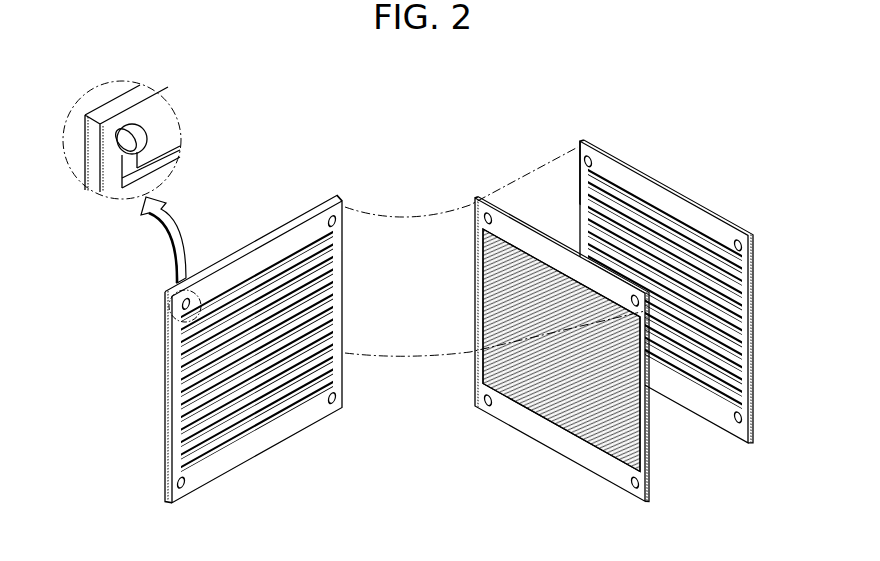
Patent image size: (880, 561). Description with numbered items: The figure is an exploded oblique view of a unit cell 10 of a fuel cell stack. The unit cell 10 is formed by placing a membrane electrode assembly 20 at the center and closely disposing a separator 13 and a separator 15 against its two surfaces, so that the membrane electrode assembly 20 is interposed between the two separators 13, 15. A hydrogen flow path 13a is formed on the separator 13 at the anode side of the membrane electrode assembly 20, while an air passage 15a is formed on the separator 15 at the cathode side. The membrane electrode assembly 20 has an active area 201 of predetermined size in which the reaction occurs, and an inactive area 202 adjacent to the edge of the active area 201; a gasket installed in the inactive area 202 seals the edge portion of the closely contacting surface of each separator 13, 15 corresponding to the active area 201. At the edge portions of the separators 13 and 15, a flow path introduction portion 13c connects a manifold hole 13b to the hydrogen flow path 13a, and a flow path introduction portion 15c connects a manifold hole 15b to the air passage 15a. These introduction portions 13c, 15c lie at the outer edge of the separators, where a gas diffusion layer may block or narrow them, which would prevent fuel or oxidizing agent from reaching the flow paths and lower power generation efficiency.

The unit cell 10 is at (442, 128).
The separator 13 is at (202, 294).
The hydrogen flow path 13a is at (259, 273).
The manifold hole 13b is at (147, 133).
The flow path introduction portion 13c is at (131, 186).
The separator 15 is at (630, 237).
The air passage 15a is at (652, 212).
The manifold hole 15b is at (587, 153).
The flow path introduction portion 15c is at (580, 170).
The membrane electrode assembly 20 is at (559, 378).
The active area 201 is at (615, 453).
The inactive area 202 is at (577, 453).